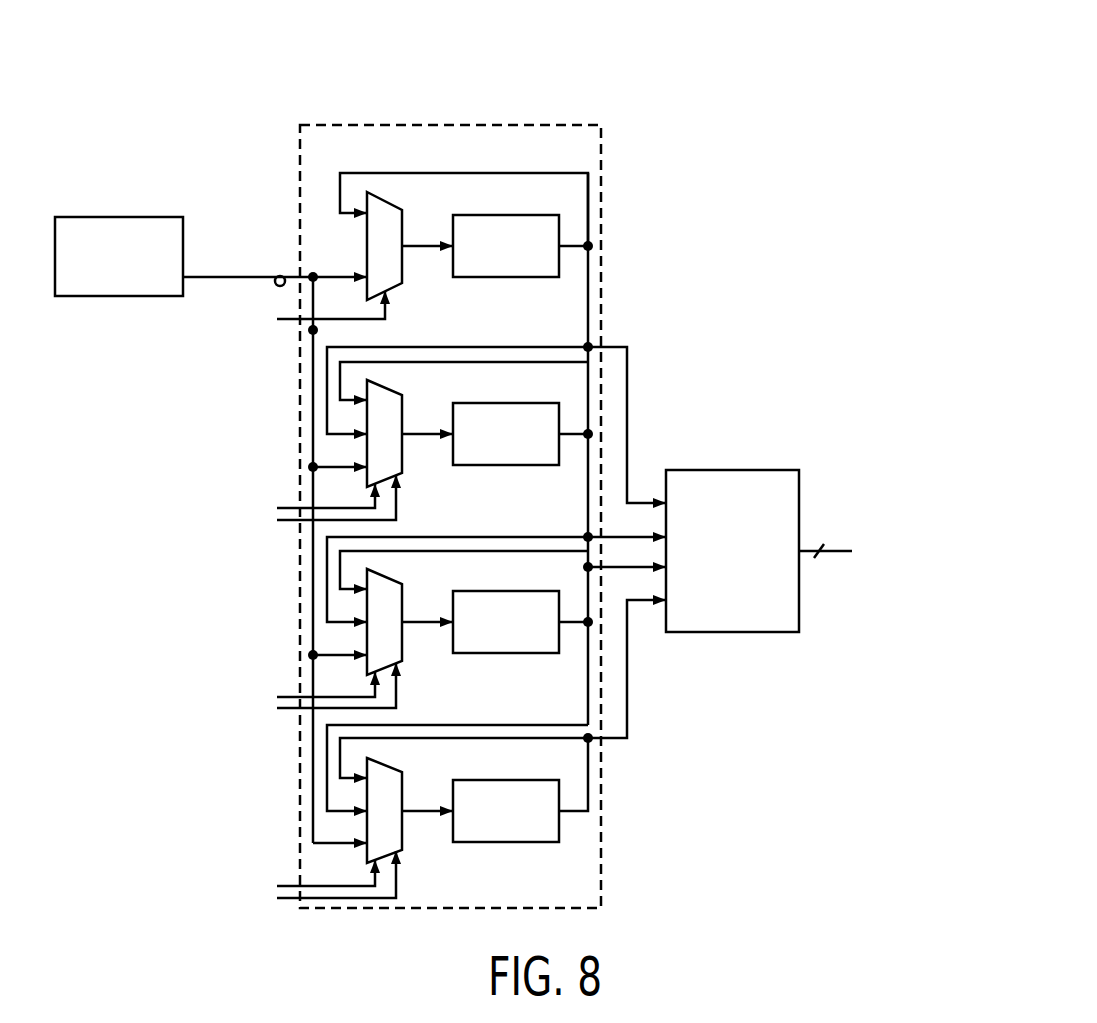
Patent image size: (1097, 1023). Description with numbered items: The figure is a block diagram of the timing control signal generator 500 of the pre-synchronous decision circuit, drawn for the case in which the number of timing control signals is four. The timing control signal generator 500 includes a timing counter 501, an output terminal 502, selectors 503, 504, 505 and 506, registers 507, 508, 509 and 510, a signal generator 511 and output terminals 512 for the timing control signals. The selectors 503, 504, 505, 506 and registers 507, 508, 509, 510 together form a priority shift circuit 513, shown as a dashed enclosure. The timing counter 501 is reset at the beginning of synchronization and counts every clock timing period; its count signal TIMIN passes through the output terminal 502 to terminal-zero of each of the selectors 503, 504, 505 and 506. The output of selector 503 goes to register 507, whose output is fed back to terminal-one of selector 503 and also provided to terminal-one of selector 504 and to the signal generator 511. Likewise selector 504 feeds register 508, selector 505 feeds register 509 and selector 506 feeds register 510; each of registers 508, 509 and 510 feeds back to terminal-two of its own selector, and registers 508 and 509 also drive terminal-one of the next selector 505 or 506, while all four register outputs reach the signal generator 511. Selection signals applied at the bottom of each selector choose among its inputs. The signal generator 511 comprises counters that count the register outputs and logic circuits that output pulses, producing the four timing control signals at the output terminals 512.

The timing control signal generator 500 is at (652, 65).
The timing counter 501 is at (131, 216).
The output terminal 502 is at (284, 277).
The selector 503 is at (402, 270).
The selector 504 is at (402, 458).
The selector 505 is at (402, 646).
The selector 506 is at (402, 835).
The register 507 is at (547, 278).
The register 508 is at (547, 466).
The register 509 is at (547, 654).
The register 510 is at (547, 843).
The signal generator 511 is at (707, 470).
The output terminals 512 is at (840, 552).
The priority shift circuit 513 is at (343, 123).